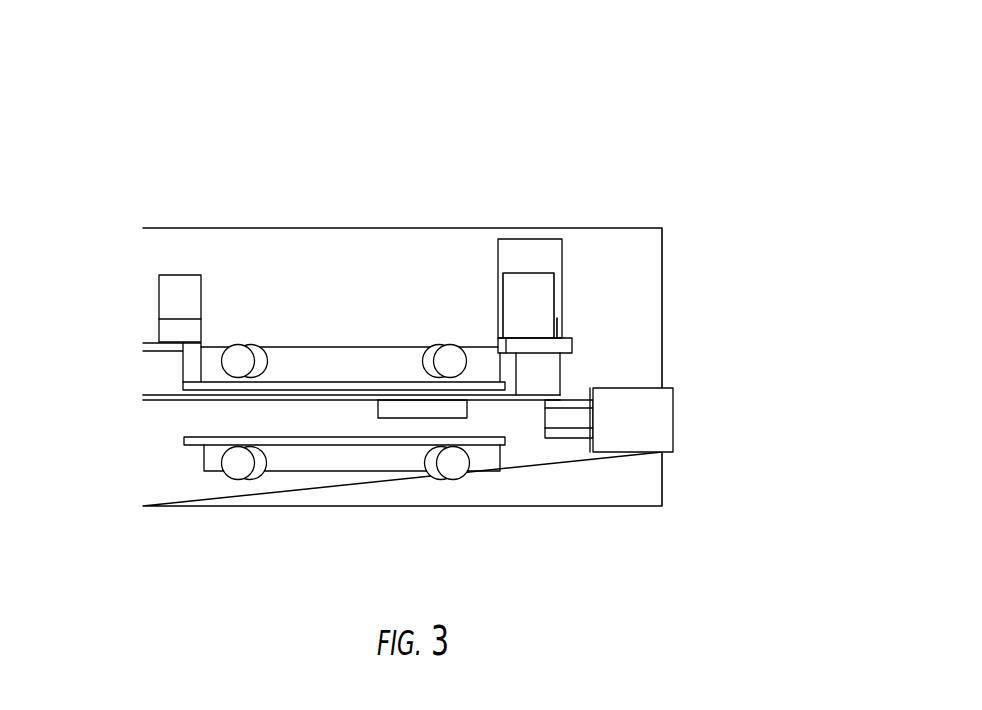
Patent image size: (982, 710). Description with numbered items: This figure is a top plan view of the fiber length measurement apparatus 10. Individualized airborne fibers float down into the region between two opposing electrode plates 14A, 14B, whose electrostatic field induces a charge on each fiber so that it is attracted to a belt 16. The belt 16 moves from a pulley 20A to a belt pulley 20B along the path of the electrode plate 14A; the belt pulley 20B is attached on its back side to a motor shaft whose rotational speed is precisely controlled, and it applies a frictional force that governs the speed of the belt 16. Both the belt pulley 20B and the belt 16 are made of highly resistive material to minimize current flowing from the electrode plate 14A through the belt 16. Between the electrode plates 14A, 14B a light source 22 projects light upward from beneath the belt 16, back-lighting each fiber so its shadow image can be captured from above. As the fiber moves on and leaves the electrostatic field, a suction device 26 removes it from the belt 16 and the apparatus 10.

The fiber length measurement apparatus 10 is at (720, 98).
The electrode plate 14A is at (396, 380).
The electrode plate 14B is at (343, 445).
The belt 16 is at (290, 398).
The pulley 20A is at (162, 378).
The belt pulley 20B is at (540, 369).
The light source 22 is at (468, 408).
The suction device 26 is at (648, 420).